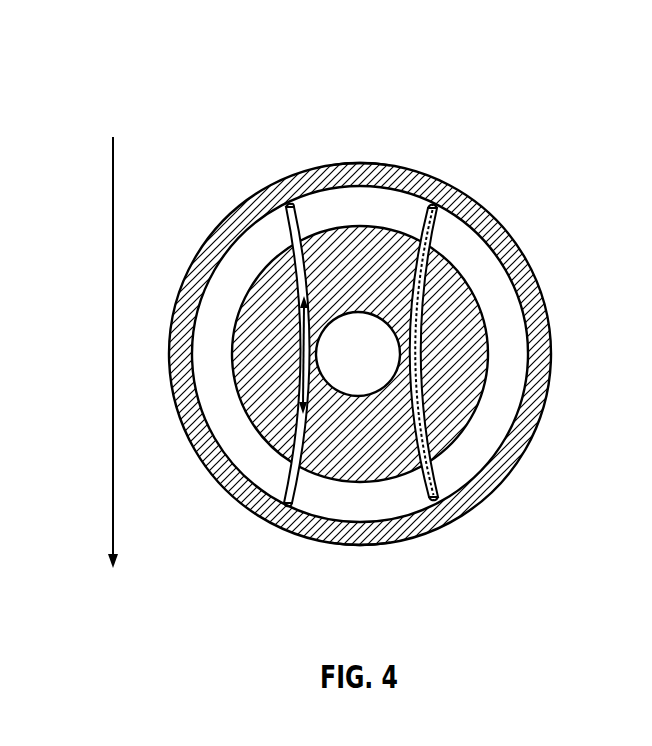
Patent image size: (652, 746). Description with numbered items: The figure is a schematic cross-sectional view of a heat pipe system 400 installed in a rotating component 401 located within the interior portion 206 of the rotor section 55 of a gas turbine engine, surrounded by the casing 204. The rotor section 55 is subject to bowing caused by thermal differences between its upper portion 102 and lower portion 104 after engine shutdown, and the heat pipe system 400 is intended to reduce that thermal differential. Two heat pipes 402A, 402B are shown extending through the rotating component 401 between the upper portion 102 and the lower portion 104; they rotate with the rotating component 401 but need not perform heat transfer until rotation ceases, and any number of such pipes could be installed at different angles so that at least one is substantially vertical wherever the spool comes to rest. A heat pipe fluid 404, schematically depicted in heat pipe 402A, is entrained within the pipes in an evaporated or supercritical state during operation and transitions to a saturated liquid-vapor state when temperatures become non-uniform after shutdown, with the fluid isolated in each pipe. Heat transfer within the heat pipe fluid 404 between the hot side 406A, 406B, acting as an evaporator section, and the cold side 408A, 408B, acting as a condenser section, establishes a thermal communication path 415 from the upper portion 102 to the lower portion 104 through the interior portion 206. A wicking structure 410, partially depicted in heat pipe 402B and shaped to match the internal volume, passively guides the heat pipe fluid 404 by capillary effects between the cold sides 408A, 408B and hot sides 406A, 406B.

The rotor section 55 is at (205, 55).
The upper portion 102 is at (358, 145).
The lower portion 104 is at (360, 563).
The casing 204 is at (543, 367).
The interior portion 206 is at (470, 450).
The heat pipe system 400 is at (457, 103).
The rotating component 401 is at (457, 385).
The heat pipe 402A is at (293, 280).
The heat pipe 402B is at (422, 280).
The heat pipe fluid 404 is at (303, 408).
The hot side 406A is at (287, 205).
The hot side 406B is at (434, 205).
The cold side 408A is at (283, 508).
The cold side 408B is at (436, 505).
The wicking structure 410 is at (412, 333).
The thermal communication path 415 is at (112, 218).